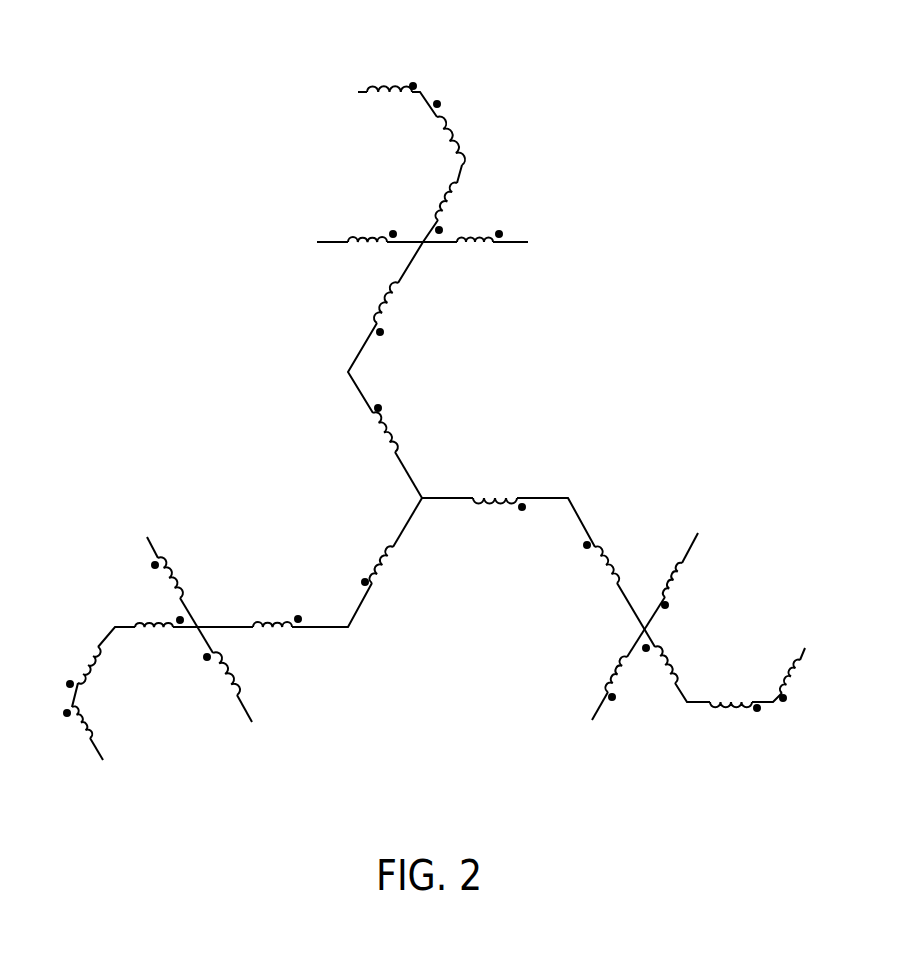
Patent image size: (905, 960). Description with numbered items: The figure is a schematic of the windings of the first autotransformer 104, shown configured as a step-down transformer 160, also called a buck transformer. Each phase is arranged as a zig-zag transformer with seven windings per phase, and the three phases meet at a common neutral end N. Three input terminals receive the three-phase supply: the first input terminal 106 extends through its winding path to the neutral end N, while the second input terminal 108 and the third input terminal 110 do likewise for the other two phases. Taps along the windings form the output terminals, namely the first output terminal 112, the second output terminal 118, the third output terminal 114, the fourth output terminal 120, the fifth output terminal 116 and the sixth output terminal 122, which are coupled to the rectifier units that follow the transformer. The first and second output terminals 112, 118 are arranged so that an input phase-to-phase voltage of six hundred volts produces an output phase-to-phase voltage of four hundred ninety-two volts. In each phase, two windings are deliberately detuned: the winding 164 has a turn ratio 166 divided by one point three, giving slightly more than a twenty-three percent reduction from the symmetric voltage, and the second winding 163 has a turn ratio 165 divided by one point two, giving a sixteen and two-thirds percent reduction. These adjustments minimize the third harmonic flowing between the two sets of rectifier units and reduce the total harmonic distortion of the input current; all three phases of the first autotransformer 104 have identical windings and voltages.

The first autotransformer 104 is at (220, 113).
The input terminal X1 106 is at (322, 78).
The input terminal X2 108 is at (790, 645).
The input terminal X3 110 is at (93, 770).
The output terminal R1 112 is at (302, 265).
The output terminal R3 114 is at (688, 520).
The output terminal R5 116 is at (233, 728).
The output terminal R2 118 is at (570, 232).
The output terminal R4 120 is at (585, 710).
The output terminal R6 122 is at (172, 532).
The step-down transformer 160 is at (148, 198).
The second winding 163 is at (410, 60).
The winding 164 is at (470, 185).
The turn ratio 165 is at (392, 100).
The turn ratio 166 is at (445, 203).
The neutral end N is at (425, 490).